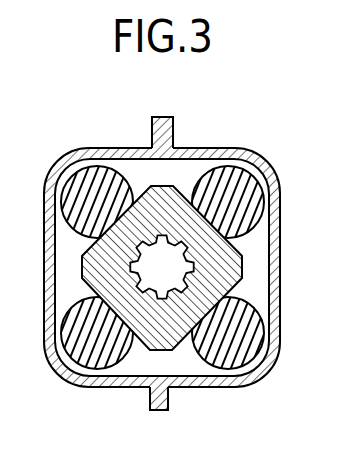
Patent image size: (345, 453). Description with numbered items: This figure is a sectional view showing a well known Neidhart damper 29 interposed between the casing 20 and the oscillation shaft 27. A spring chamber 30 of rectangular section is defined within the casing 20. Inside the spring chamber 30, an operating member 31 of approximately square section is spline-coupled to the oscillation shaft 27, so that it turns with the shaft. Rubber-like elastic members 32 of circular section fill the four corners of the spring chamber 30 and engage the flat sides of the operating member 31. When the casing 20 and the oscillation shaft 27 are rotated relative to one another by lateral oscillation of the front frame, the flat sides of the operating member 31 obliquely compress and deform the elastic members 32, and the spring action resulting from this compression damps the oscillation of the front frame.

The casing 20 is at (47, 248).
The oscillation shaft 27 is at (172, 282).
The Neidhart damper 29 is at (200, 147).
The spring chamber 30 is at (144, 168).
The operating member 31 is at (243, 265).
The rubber-like elastic members 32 is at (104, 216).